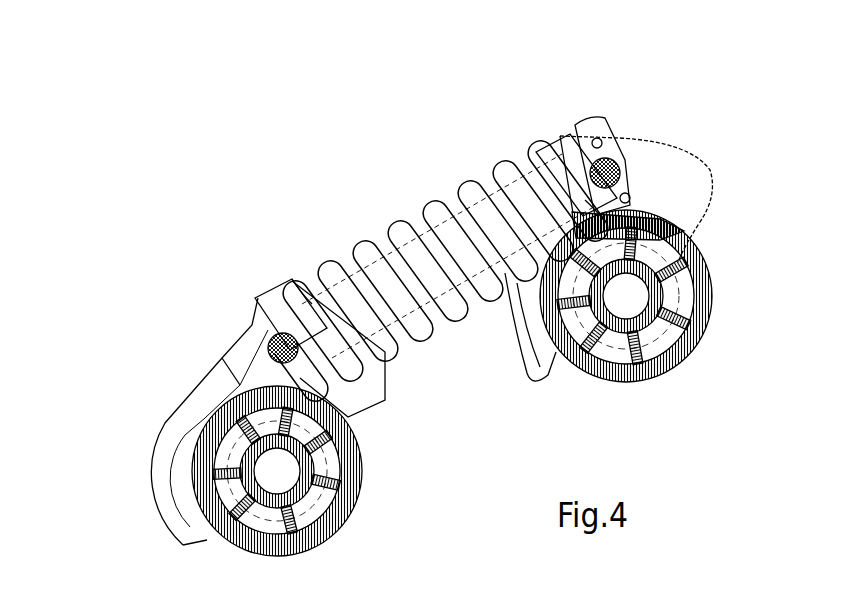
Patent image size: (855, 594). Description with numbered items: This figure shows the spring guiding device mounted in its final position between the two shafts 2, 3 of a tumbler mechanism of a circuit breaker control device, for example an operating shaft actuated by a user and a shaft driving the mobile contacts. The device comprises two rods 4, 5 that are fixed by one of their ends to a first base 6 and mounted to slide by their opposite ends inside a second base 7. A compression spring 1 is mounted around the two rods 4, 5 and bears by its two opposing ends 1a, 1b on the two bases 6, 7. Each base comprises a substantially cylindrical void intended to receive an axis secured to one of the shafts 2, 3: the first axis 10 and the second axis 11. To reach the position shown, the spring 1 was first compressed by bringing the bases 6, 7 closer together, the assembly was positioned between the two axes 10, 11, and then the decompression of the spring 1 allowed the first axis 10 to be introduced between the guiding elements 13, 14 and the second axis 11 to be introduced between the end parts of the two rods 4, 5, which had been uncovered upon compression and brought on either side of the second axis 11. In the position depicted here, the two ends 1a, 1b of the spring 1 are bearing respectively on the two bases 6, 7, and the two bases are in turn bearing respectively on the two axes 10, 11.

The compression spring 1 is at (415, 307).
The end of the spring 1a is at (598, 210).
The end of the spring 1b is at (293, 286).
The shaft 2 is at (675, 197).
The shaft 3 is at (167, 422).
The rod 4 is at (492, 263).
The rod 5 is at (473, 227).
The first base 6 is at (578, 152).
The second base 7 is at (270, 298).
The first axis 10 is at (608, 172).
The second axis 11 is at (276, 342).
The guiding element 13 is at (627, 193).
The guiding element 14 is at (590, 135).